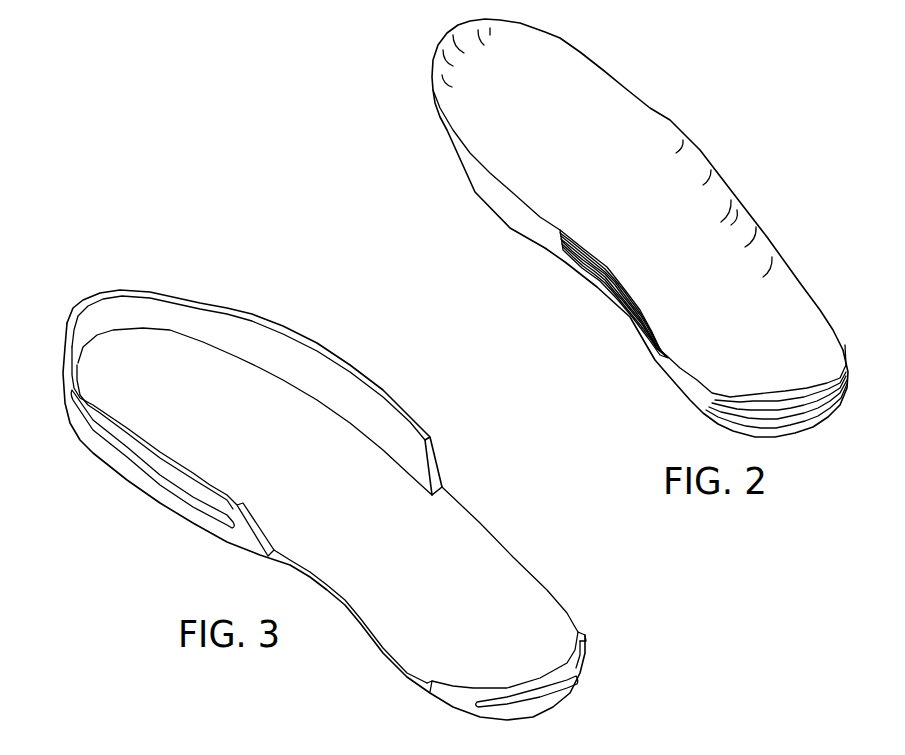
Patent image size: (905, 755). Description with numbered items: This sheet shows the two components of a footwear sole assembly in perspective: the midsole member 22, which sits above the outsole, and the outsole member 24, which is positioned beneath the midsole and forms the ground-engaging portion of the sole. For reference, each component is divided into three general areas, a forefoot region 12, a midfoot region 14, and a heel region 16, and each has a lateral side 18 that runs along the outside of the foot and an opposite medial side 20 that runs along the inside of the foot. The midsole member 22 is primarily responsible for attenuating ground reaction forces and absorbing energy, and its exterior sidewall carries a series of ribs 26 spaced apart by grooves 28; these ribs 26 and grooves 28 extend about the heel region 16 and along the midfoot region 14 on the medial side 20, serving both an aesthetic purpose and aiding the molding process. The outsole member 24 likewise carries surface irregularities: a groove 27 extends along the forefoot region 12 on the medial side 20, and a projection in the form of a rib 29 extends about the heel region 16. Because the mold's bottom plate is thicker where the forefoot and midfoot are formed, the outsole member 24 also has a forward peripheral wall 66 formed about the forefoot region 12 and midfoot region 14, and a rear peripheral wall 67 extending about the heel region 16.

In FIG. 2, the forefoot region 12 is at (521, 98).
In FIG. 3, the forefoot region 12 is at (159, 385).
In FIG. 2, the midfoot region 14 is at (661, 211).
In FIG. 3, the midfoot region 14 is at (343, 496).
In FIG. 2, the heel region 16 is at (768, 341).
In FIG. 3, the heel region 16 is at (493, 620).
In FIG. 2, the lateral side 18 is at (670, 120).
In FIG. 3, the lateral side 18 is at (335, 353).
In FIG. 2, the medial side 20 is at (517, 213).
In FIG. 3, the medial side 20 is at (123, 488).
In FIG. 2, the midsole member 22 is at (593, 83).
In FIG. 3, the outsole member 24 is at (467, 533).
In FIG. 2, the ribs 26 is at (735, 410).
In FIG. 3, the groove 27 is at (180, 502).
In FIG. 2, the grooves 28 is at (780, 425).
In FIG. 3, the rib 29 is at (557, 695).
In FIG. 3, the forward peripheral wall 66 is at (252, 332).
In FIG. 3, the rear peripheral wall 67 is at (500, 690).